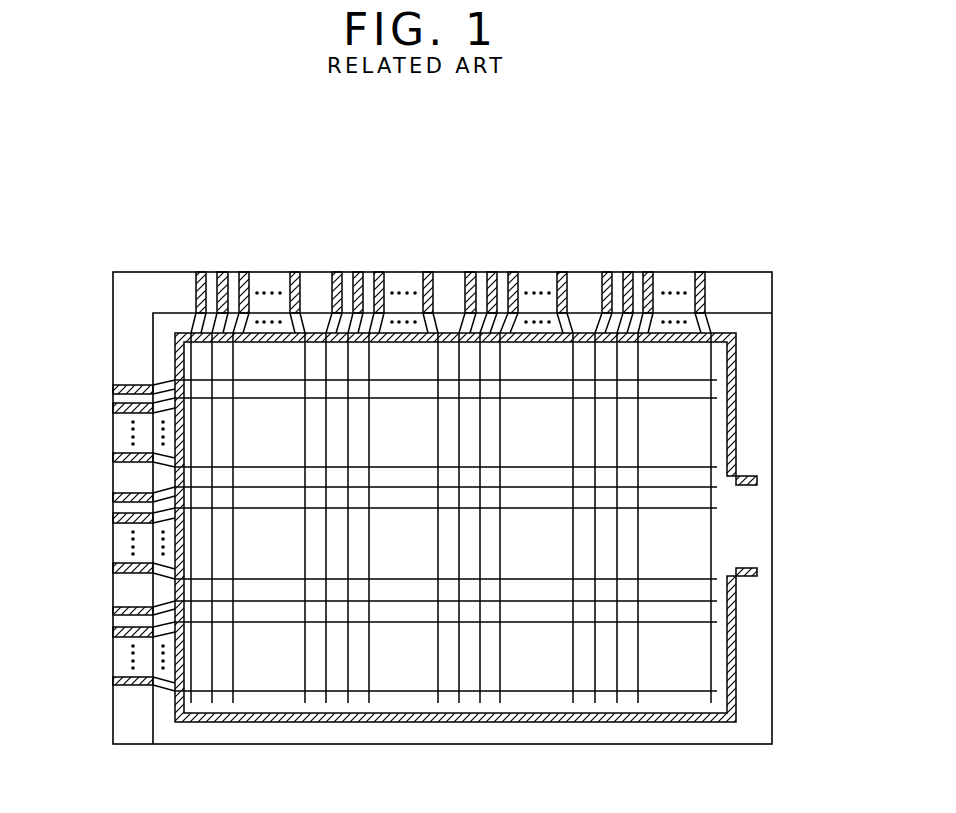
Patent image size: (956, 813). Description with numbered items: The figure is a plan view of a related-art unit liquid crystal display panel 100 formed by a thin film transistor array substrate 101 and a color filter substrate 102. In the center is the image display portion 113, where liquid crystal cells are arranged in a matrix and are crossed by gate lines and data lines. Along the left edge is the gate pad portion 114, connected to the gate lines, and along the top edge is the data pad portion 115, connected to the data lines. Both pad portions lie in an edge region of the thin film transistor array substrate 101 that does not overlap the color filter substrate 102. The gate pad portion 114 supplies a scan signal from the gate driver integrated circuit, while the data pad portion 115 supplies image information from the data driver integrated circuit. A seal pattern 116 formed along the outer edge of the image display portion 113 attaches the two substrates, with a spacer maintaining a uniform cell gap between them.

The liquid crystal display panel 100 is at (139, 255).
The thin film transistor array substrate 101 is at (758, 293).
The color filter substrate 102 is at (758, 350).
The image display portion 113 is at (420, 445).
The gate pad portion 114 is at (105, 690).
The data pad portion 115 is at (710, 257).
The seal pattern 116 is at (736, 408).